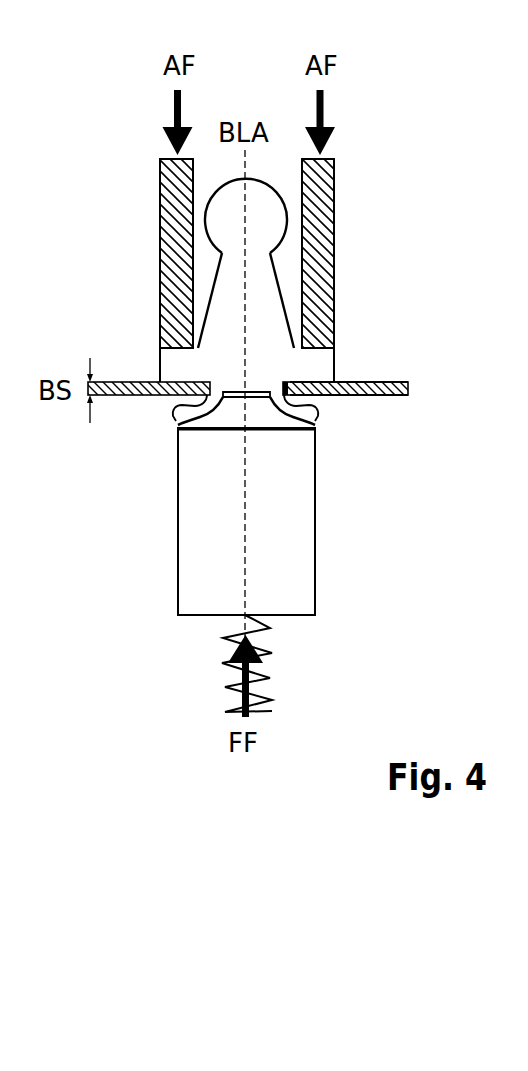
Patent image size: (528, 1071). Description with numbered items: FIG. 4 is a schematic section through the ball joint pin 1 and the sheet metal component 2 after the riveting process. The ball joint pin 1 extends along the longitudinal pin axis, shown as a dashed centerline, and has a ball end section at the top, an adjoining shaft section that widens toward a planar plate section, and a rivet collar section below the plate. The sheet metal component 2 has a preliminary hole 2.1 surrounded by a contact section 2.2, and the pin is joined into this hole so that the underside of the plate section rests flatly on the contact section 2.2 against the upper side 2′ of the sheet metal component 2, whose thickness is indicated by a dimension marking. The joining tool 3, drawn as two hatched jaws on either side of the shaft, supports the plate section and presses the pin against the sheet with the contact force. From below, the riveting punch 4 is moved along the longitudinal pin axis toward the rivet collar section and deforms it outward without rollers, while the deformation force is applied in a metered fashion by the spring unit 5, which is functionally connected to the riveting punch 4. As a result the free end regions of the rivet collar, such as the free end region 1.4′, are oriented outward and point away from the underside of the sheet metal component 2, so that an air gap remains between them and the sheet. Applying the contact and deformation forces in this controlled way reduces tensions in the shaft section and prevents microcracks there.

The ball joint pin 1 is at (284, 187).
The free end region of the rivet collar section 1.4′ is at (178, 422).
The sheet metal component 2 is at (412, 362).
The upper side of the sheet metal component 2′ is at (363, 380).
The preliminary hole 2.1 is at (331, 439).
The contact section 2.2 is at (168, 396).
The joining tool 3 is at (150, 230).
The riveting punch 4 is at (300, 548).
The spring unit 5 is at (250, 653).